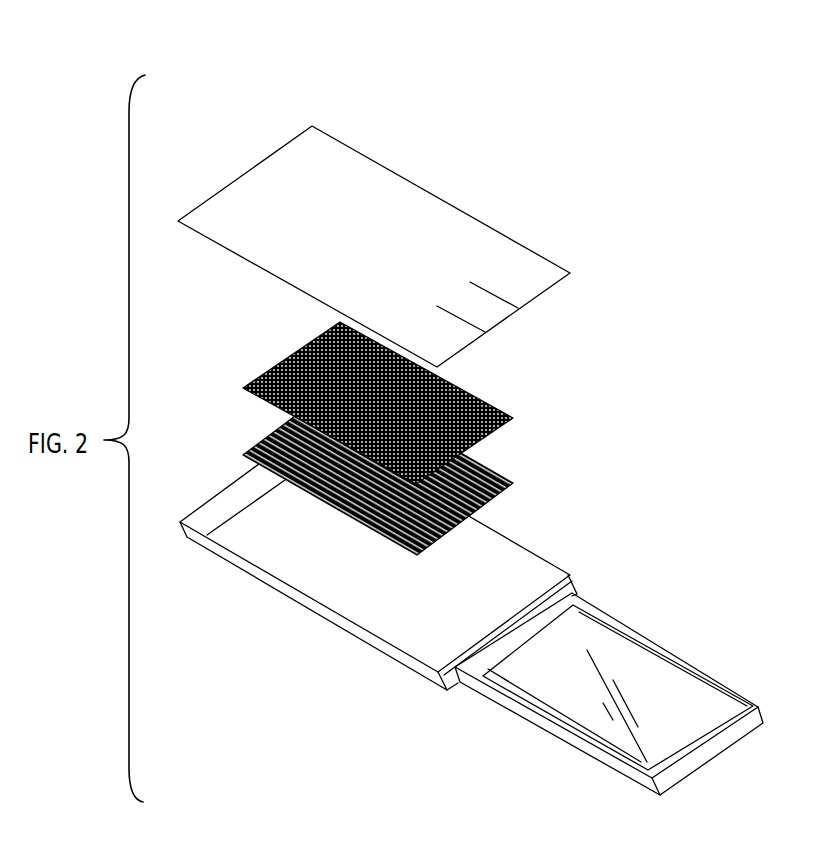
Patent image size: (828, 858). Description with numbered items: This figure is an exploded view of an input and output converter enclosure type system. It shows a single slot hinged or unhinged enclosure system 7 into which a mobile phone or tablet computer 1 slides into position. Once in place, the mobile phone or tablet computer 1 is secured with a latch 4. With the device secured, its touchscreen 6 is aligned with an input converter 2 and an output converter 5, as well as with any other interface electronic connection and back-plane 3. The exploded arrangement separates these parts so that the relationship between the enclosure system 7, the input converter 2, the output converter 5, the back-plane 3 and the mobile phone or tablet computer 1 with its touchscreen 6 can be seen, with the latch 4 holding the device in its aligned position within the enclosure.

The mobile phone or tablet computer 1 is at (500, 744).
The input converter 2 is at (270, 356).
The back-plane 3 is at (197, 495).
The latch 4 is at (492, 258).
The output converter 5 is at (485, 478).
The touchscreen 6 is at (650, 666).
The enclosure system 7 is at (314, 205).